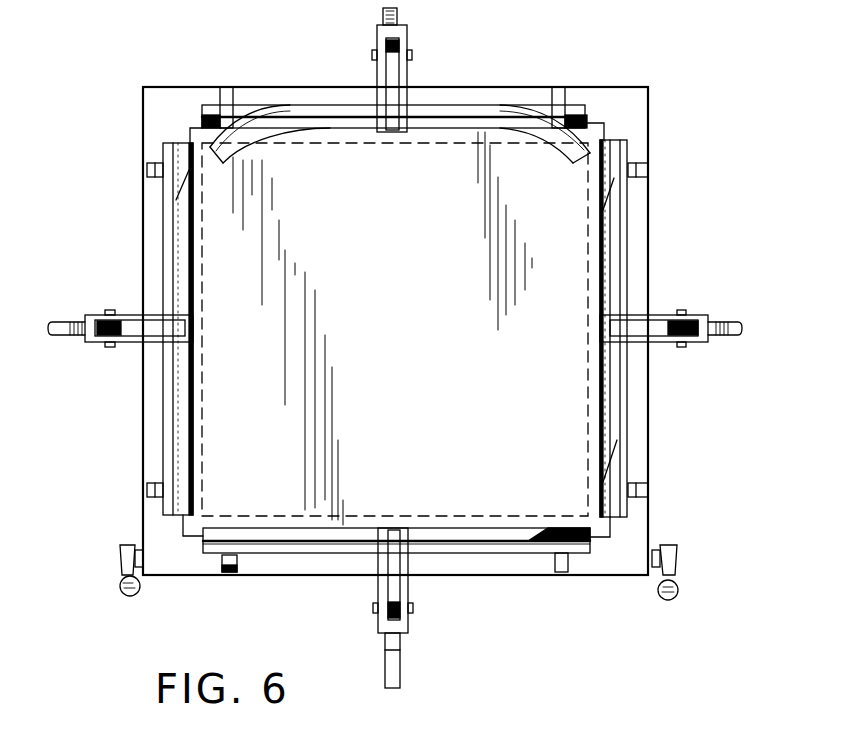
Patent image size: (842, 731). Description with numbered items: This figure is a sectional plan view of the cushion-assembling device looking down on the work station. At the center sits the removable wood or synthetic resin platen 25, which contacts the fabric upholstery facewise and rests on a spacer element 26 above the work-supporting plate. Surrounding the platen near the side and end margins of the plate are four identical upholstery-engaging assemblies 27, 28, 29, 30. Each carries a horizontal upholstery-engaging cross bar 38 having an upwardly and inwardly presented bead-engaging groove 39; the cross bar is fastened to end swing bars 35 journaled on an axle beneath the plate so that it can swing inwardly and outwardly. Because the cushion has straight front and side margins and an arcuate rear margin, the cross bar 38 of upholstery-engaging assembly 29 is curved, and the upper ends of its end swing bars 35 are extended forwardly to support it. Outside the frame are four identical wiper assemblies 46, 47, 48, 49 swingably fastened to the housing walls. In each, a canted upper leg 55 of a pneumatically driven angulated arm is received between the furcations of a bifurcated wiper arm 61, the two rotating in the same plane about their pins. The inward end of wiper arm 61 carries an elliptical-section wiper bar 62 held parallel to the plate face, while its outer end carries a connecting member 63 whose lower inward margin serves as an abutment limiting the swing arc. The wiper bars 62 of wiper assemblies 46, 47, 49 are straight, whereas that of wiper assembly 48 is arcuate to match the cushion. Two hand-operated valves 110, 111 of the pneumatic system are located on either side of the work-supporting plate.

The platen 25 is at (143, 461).
The spacer element 26 is at (588, 456).
The upholstery-engaging assembly 27 is at (507, 558).
The upholstery-engaging assembly 28 is at (630, 240).
The upholstery-engaging assembly 29 is at (463, 100).
The upholstery-engaging assembly 30 is at (160, 236).
The end swing bar 35 is at (566, 88).
The cross bar 38 is at (287, 103).
The bead-engaging groove 39 is at (183, 145).
The wiper assembly 46 is at (374, 612).
The wiper assembly 47 is at (722, 309).
The wiper assembly 48 is at (408, 44).
The wiper assembly 49 is at (74, 315).
The upper leg 55 is at (413, 608).
The wiper arm 61 is at (410, 593).
The wiper bar 62 is at (590, 297).
The connecting member 63 is at (398, 630).
The hand-operated valve 110 is at (120, 587).
The hand-operated valve 111 is at (678, 590).